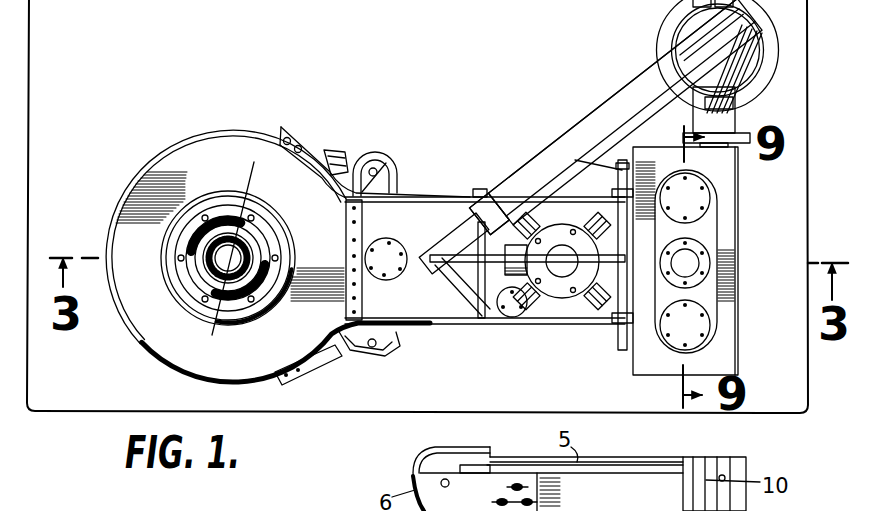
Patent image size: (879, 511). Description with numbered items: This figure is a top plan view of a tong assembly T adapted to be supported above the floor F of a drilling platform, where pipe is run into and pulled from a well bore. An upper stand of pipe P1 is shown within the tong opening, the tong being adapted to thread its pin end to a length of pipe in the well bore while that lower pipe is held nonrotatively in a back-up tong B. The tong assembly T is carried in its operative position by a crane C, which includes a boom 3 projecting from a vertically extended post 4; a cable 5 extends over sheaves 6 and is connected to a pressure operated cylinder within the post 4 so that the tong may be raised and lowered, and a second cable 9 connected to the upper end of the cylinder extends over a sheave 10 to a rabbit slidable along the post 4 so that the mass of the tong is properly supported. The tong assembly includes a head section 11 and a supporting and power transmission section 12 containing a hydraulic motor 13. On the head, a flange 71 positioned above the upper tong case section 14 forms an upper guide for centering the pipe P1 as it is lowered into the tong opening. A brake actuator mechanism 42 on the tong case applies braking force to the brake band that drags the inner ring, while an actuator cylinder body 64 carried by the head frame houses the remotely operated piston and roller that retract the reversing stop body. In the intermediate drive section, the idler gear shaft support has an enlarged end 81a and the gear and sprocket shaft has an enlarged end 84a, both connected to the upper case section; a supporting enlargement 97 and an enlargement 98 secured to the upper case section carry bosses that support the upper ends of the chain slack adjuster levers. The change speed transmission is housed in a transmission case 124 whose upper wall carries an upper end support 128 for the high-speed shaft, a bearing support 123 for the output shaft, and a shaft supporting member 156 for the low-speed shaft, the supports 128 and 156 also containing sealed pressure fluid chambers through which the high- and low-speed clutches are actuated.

The floor F is at (62, 414).
The upper tong case section 14 is at (156, 333).
The head section 11 is at (219, 132).
The flange 71 is at (177, 243).
The upper stand of pipe P1 is at (229, 262).
The brake actuator mechanism 42 is at (334, 174).
The tong assembly T is at (421, 192).
The enlarged end of shaft support 81a is at (376, 276).
The enlarged end of shaft 84a is at (445, 292).
The hydraulic motor 13 is at (562, 301).
The enlargement 98 is at (512, 319).
The supporting and power transmission section 12 is at (614, 335).
The cable 5 is at (586, 139).
The boom 3 is at (538, 159).
The supporting enlargement 97 is at (496, 198).
The crane C is at (628, 73).
The back-up tong B is at (664, 15).
The post 4 is at (752, 47).
The sheaves 6 is at (704, 42).
The second cable 9 is at (725, 68).
The sheave 10 is at (730, 108).
The transmission case 124 is at (727, 231).
The upper end support 128 is at (701, 203).
The bearing support 123 is at (695, 268).
The shaft supporting member 156 is at (703, 328).
The actuator cylinder body 64 is at (321, 360).